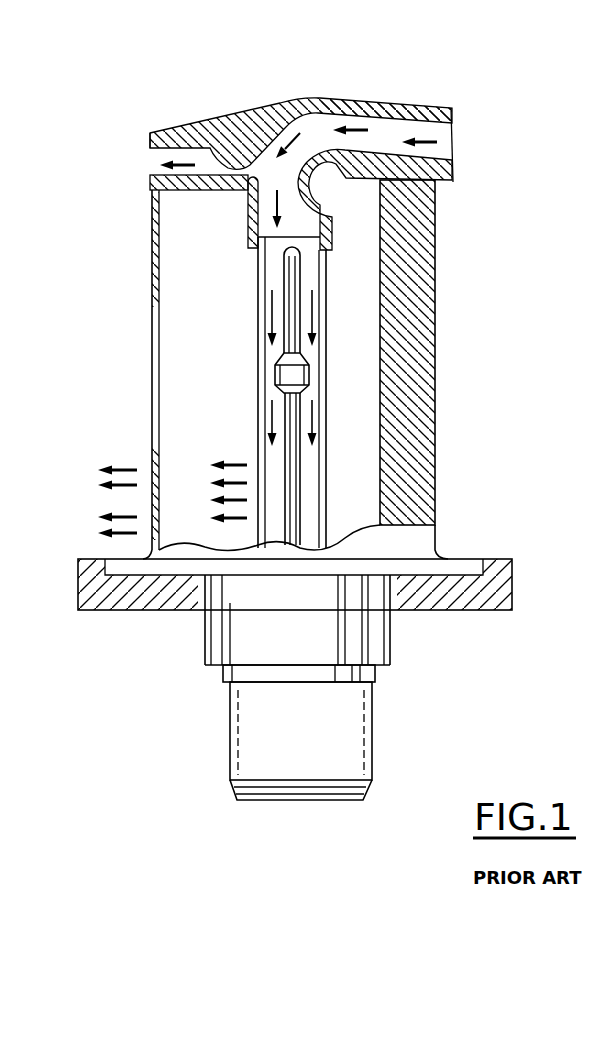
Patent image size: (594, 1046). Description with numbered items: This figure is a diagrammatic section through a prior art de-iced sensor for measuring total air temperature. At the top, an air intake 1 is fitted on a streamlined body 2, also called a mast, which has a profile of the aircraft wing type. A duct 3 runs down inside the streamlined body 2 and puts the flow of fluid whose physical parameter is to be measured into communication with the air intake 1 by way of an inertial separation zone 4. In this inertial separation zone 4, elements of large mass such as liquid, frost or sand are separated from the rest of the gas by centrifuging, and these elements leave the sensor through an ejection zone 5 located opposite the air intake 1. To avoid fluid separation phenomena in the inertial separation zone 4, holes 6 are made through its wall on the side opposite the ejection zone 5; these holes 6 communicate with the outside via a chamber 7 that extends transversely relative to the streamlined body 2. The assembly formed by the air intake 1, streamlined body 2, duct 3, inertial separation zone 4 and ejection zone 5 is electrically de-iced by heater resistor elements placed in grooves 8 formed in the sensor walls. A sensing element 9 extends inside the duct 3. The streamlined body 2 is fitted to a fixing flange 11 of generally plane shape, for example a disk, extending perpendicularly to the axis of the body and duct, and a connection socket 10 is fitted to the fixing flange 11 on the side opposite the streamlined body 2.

The air intake 1 is at (455, 148).
The streamlined body 2 is at (418, 420).
The duct 3 is at (250, 205).
The inertial separation zone 4 is at (223, 118).
The ejection zone 5 is at (151, 167).
The holes 6 is at (303, 143).
The chamber 7 is at (323, 172).
The grooves 8 is at (432, 108).
The sensing element 9 is at (288, 317).
The connection socket 10 is at (258, 744).
The fixing flange 11 is at (350, 192).